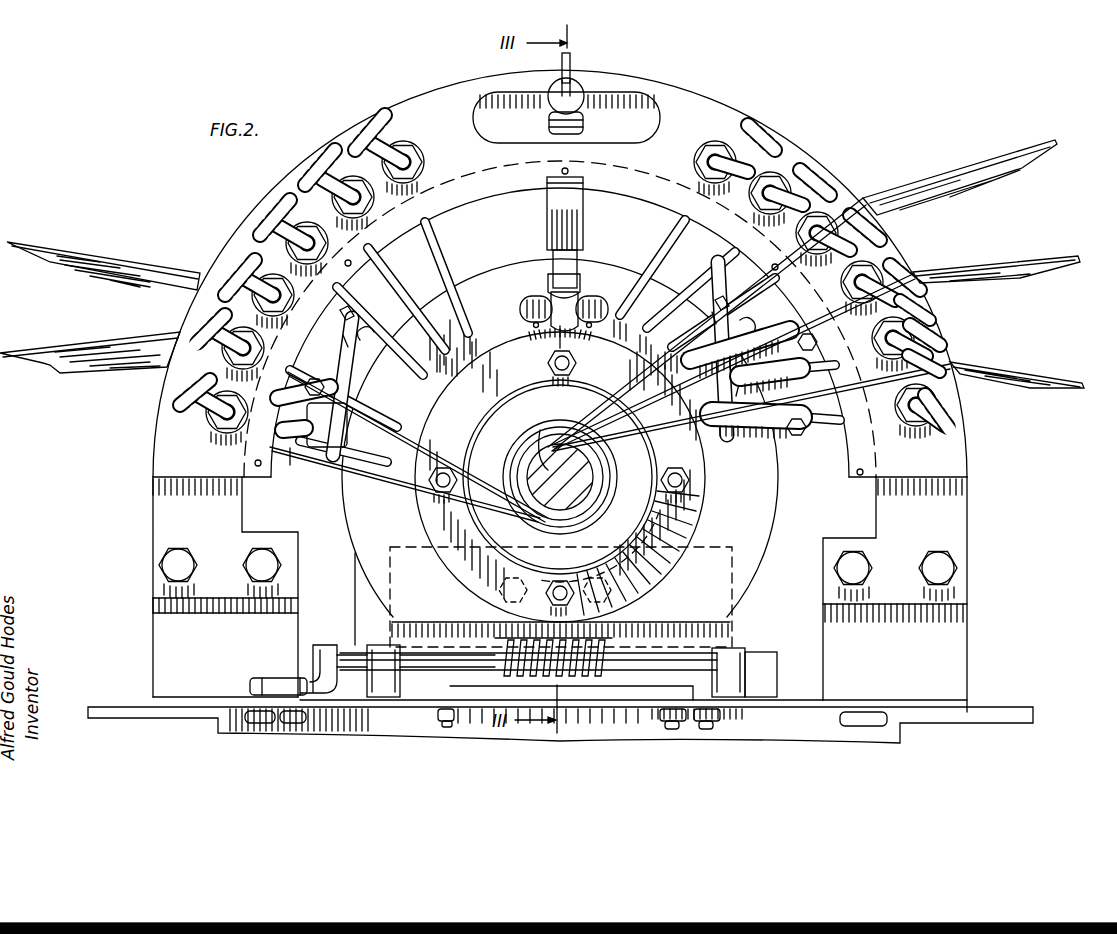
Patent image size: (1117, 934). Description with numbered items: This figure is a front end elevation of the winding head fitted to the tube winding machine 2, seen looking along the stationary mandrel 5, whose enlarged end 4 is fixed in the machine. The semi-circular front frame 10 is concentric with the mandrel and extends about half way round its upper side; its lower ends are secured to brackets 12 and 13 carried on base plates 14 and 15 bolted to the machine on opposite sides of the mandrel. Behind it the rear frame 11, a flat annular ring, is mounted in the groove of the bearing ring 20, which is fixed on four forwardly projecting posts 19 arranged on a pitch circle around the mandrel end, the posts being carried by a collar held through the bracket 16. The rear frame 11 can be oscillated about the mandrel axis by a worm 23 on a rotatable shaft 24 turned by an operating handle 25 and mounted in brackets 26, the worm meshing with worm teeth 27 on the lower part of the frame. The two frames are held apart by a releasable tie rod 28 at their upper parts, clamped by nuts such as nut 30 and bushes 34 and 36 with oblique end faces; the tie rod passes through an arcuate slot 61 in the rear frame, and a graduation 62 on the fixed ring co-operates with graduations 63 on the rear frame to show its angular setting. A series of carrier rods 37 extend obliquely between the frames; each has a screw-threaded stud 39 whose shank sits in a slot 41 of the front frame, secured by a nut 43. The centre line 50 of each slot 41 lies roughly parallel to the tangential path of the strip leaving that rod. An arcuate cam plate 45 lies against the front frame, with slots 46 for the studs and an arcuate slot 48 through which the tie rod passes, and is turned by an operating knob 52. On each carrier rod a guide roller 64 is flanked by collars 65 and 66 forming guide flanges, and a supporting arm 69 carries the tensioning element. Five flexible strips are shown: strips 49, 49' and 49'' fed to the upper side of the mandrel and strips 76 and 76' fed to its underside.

The tube winding machine 2 is at (348, 603).
The enlarged end of mandrel 4 is at (468, 540).
The stationary mandrel 5 is at (550, 473).
The front frame 10 is at (180, 525).
The rear frame 11 is at (485, 287).
The bracket 12 is at (205, 665).
The bracket 13 is at (890, 665).
The base plate 14 is at (350, 676).
The base plate 15 is at (787, 710).
The bracket 16 is at (740, 637).
The posts 19 is at (553, 365).
The bearing ring 20 is at (677, 525).
The worm 23 is at (667, 658).
The rotatable shaft 24 is at (670, 660).
The operating handle 25 is at (318, 682).
The brackets 26 is at (368, 692).
The worm teeth 27 is at (612, 683).
The tie rod 28 is at (567, 267).
The nut 30 is at (577, 278).
The bush 34 is at (542, 297).
The bush 36 is at (583, 128).
The carrier rods 37 is at (432, 240).
The screw-threaded stud 39 is at (345, 200).
The slot 41 is at (930, 340).
The nut 43 is at (950, 370).
The arcuate cam plate 45 is at (762, 135).
The slots 46 is at (240, 448).
The arcuate slot 48 is at (622, 93).
The flexible strip 49 is at (798, 305).
The flexible strip 49' is at (816, 347).
The flexible strip 49'' is at (818, 401).
The centre line of slot 50 is at (630, 384).
The operating knob 52 is at (565, 235).
The arcuate slot 61 is at (590, 300).
The graduation 62 is at (574, 355).
The graduations 63 is at (540, 336).
The guide roller 64 is at (283, 417).
The collar 65 is at (798, 430).
The collar 66 is at (347, 377).
The supporting arm 69 is at (713, 273).
The flexible strip 76 is at (277, 374).
The flexible strip 76' is at (270, 415).